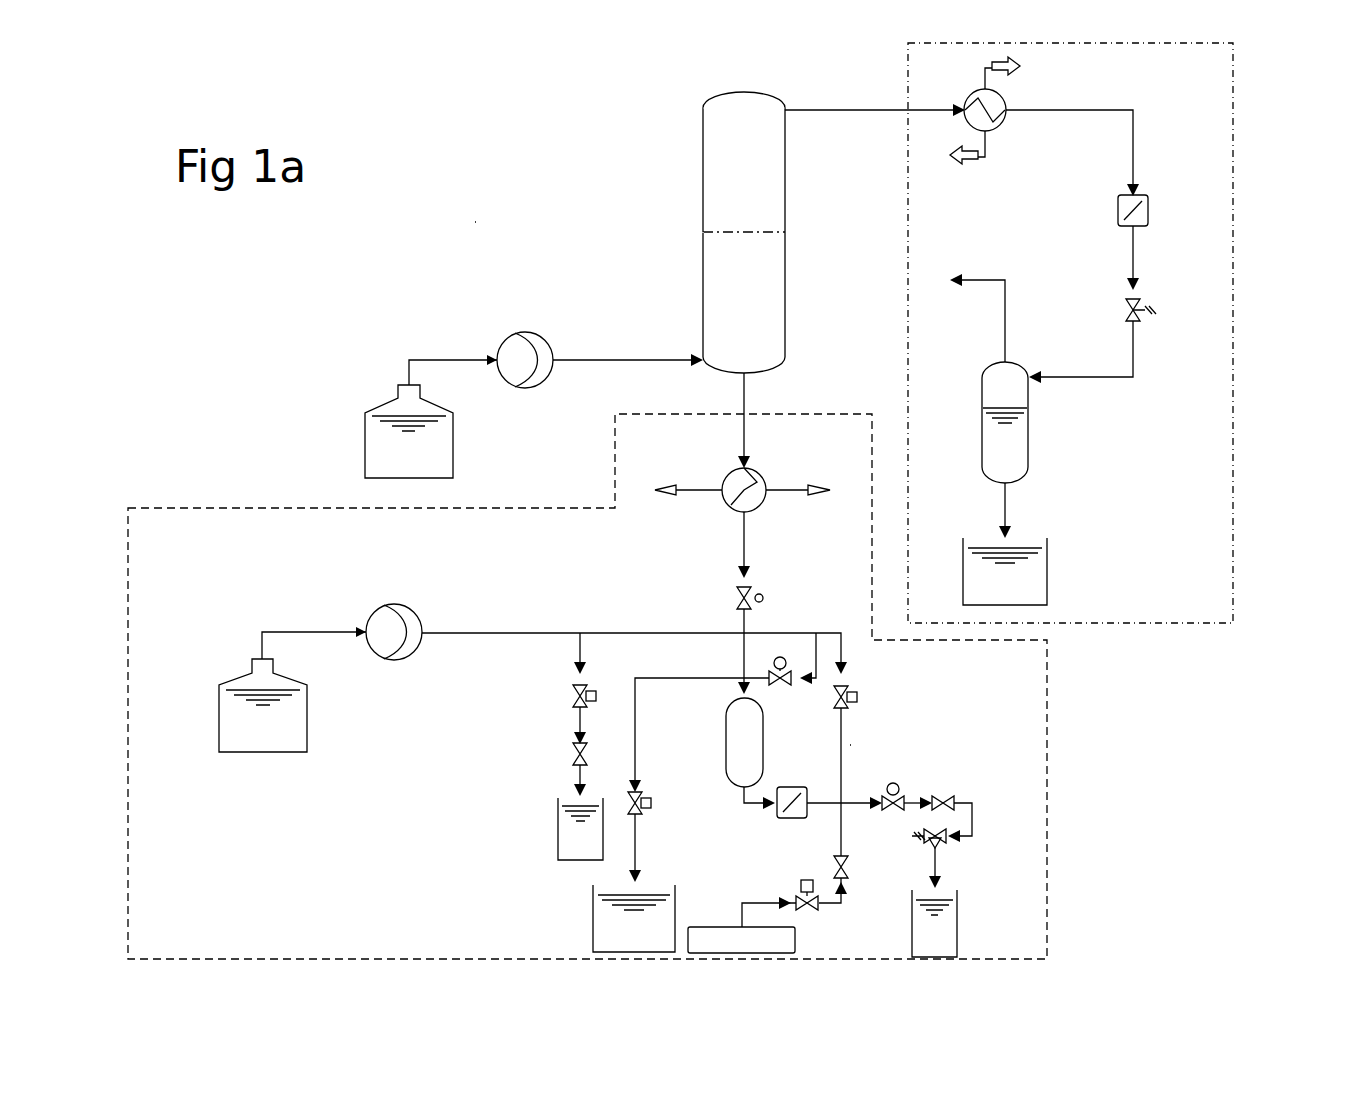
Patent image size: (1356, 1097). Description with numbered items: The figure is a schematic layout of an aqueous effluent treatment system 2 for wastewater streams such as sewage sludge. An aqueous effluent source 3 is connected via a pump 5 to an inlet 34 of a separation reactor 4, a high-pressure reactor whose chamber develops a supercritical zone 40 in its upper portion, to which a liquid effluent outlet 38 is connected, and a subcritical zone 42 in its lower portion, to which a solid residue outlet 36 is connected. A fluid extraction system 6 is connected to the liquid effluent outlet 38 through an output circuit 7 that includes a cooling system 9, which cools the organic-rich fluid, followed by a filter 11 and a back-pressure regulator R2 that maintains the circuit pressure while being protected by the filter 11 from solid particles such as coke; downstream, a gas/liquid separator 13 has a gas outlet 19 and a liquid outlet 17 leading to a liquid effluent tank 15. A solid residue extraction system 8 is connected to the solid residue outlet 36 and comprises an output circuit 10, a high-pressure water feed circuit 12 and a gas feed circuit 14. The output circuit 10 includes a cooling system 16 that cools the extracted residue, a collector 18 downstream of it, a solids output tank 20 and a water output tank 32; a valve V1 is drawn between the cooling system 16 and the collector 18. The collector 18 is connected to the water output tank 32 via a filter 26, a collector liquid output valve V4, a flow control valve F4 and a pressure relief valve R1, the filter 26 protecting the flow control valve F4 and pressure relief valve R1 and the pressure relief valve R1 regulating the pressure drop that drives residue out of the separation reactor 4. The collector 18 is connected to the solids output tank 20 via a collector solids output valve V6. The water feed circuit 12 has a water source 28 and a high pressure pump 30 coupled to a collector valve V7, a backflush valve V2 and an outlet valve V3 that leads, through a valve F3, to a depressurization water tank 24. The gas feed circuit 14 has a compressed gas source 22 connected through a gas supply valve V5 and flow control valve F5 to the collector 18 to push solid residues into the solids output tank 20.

The aqueous effluent treatment system 2 is at (486, 223).
The aqueous effluent source 3 is at (356, 414).
The separation reactor 4 is at (694, 194).
The pump 5 is at (521, 324).
The fluid extraction system 6 is at (1262, 143).
The output circuit 7 is at (1152, 139).
The solid residue extraction system 8 is at (855, 414).
The cooling system 9 is at (1005, 96).
The output circuit 10 is at (758, 546).
The filter 11 is at (1140, 214).
The high-pressure water feed circuit 12 is at (576, 625).
The gas/liquid separator 13 is at (1035, 433).
The gas feed circuit 14 is at (848, 747).
The liquid effluent tank 15 is at (1053, 554).
The cooling system 16 is at (761, 472).
The liquid outlet 17 is at (1007, 500).
The collector 18 is at (722, 737).
The gas outlet 19 is at (978, 279).
The solids output tank 20 is at (680, 882).
The compressed gas source 22 is at (724, 938).
The depressurization water tank 24 is at (550, 827).
The filter 26 is at (795, 810).
The water source 28 is at (213, 652).
The high pressure pump 30 is at (390, 604).
The water output tank 32 is at (960, 918).
The inlet 34 is at (675, 358).
The solid residue outlet 36 is at (745, 386).
The liquid effluent outlet 38 is at (828, 111).
The supercritical zone 40 is at (766, 163).
The subcritical zone 42 is at (762, 268).
The valve V1 is at (768, 640).
The backflush valve V2 is at (717, 724).
The outlet valve V3 is at (570, 714).
The collector liquid output valve V4 is at (886, 783).
The gas supply valve V5 is at (782, 908).
The collector solids output valve V6 is at (658, 836).
The collector valve V7 is at (868, 762).
The filter F3 is at (566, 769).
The flow control valve F4 is at (951, 806).
The flow control valve F5 is at (851, 879).
The pressure relief valve R1 is at (949, 858).
The back-pressure regulator R2 is at (1092, 304).